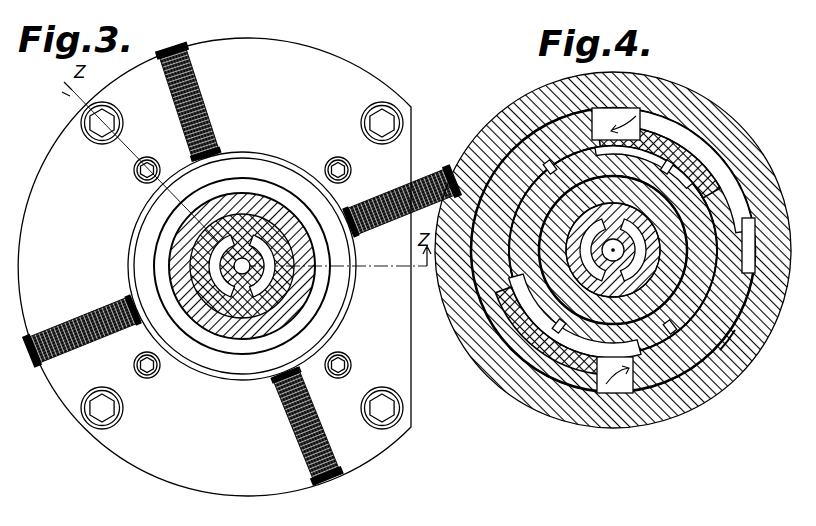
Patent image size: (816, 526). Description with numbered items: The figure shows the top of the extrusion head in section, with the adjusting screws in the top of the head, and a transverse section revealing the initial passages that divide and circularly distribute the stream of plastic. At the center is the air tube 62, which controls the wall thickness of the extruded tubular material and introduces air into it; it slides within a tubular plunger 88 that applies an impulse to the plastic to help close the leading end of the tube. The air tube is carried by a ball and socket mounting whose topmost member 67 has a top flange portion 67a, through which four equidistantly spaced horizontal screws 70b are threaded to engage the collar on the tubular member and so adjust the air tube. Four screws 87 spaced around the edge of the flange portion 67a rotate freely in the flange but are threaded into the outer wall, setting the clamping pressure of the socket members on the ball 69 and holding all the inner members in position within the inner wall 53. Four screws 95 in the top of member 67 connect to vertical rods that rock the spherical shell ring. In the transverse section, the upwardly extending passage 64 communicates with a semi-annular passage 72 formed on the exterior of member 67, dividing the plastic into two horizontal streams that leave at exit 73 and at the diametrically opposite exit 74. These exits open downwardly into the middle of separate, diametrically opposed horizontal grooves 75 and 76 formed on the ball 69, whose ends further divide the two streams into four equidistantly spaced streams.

In FIG. 3, the top flange portion 67a is at (132, 466).
In FIG. 3, the horizontal screws 70b is at (186, 40).
In FIG. 3, the screws 87 is at (90, 142).
In FIG. 3, the screws 95 is at (136, 176).
In FIG. 4, the exit 74 is at (572, 80).
In FIG. 4, the ball 69 is at (500, 160).
In FIG. 4, the tubular plunger 88 is at (478, 312).
In FIG. 4, the air tube and valve 62 is at (502, 352).
In FIG. 4, the horizontal groove 76 is at (648, 118).
In FIG. 4, the horizontal groove 75 is at (540, 370).
In FIG. 4, the exit 73 is at (556, 382).
In FIG. 4, the topmost member 67 is at (654, 384).
In FIG. 4, the semi-annular passage 72 is at (684, 384).
In FIG. 4, the upwardly extending passage 64 is at (754, 226).
In FIG. 4, the inner wall 53 is at (716, 346).